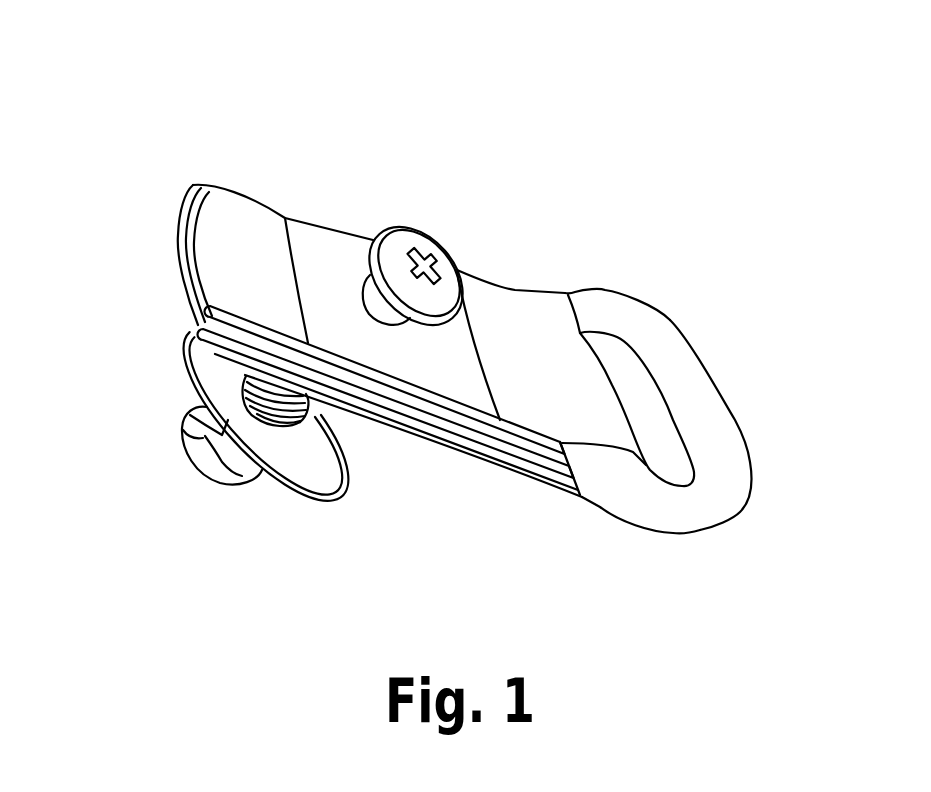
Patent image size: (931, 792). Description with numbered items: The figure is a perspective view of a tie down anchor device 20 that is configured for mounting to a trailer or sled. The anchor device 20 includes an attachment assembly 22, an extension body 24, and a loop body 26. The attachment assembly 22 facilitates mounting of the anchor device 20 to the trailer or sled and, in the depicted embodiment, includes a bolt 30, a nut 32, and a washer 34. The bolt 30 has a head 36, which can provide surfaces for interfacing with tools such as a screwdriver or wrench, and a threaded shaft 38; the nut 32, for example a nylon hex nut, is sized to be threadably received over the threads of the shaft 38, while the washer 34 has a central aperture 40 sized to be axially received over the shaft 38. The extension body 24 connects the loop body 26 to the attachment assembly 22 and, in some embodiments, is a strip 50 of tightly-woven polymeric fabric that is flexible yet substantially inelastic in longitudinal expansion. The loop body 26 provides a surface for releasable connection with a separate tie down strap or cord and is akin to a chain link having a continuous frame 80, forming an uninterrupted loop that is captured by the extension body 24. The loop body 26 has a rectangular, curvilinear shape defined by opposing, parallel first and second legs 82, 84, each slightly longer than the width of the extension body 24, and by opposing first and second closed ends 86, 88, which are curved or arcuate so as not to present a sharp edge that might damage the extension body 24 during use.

The tie down anchor device 20 is at (506, 52).
The attachment assembly 22 is at (161, 476).
The extension body 24 is at (336, 212).
The loop body 26 is at (702, 420).
The bolt 30 is at (448, 262).
The nut 32 is at (229, 448).
The washer 34 is at (188, 390).
The head 36 is at (452, 274).
The threaded shaft 38 is at (317, 402).
The central aperture 40 is at (311, 458).
The strip 50 is at (546, 488).
The continuous frame 80 is at (746, 475).
The first leg 82 is at (597, 468).
The second leg 84 is at (729, 425).
The first closed end 86 is at (606, 291).
The second closed end 88 is at (677, 518).